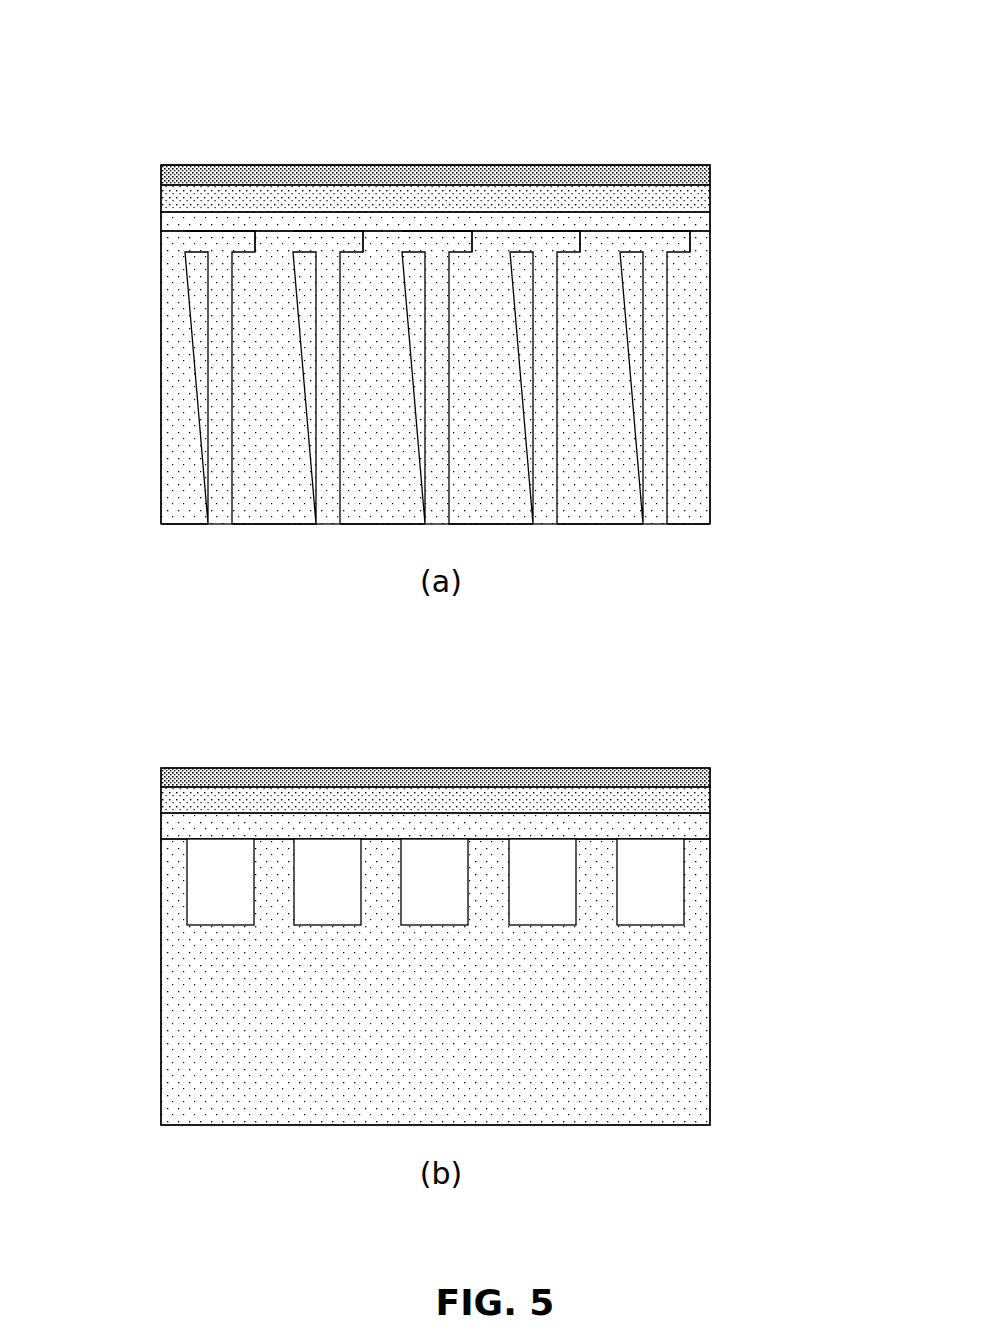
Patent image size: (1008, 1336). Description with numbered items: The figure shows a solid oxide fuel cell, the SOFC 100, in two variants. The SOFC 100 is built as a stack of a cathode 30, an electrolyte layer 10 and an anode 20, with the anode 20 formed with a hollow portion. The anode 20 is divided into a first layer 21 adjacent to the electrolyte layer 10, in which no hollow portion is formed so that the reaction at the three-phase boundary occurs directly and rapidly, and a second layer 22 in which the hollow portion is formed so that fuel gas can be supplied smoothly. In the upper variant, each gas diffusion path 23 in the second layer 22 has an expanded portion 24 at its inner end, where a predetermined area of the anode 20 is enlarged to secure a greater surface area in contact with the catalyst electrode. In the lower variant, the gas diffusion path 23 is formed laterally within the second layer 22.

The SOFC 100 is at (178, 78).
The electrolyte layer 10 is at (170, 195).
The cathode 30 is at (608, 172).
The anode 20 is at (812, 218).
The first layer 21 is at (705, 215).
The second layer 22 is at (718, 523).
The gas diffusion path 23 is at (220, 420).
The expanded portion 24 is at (187, 242).